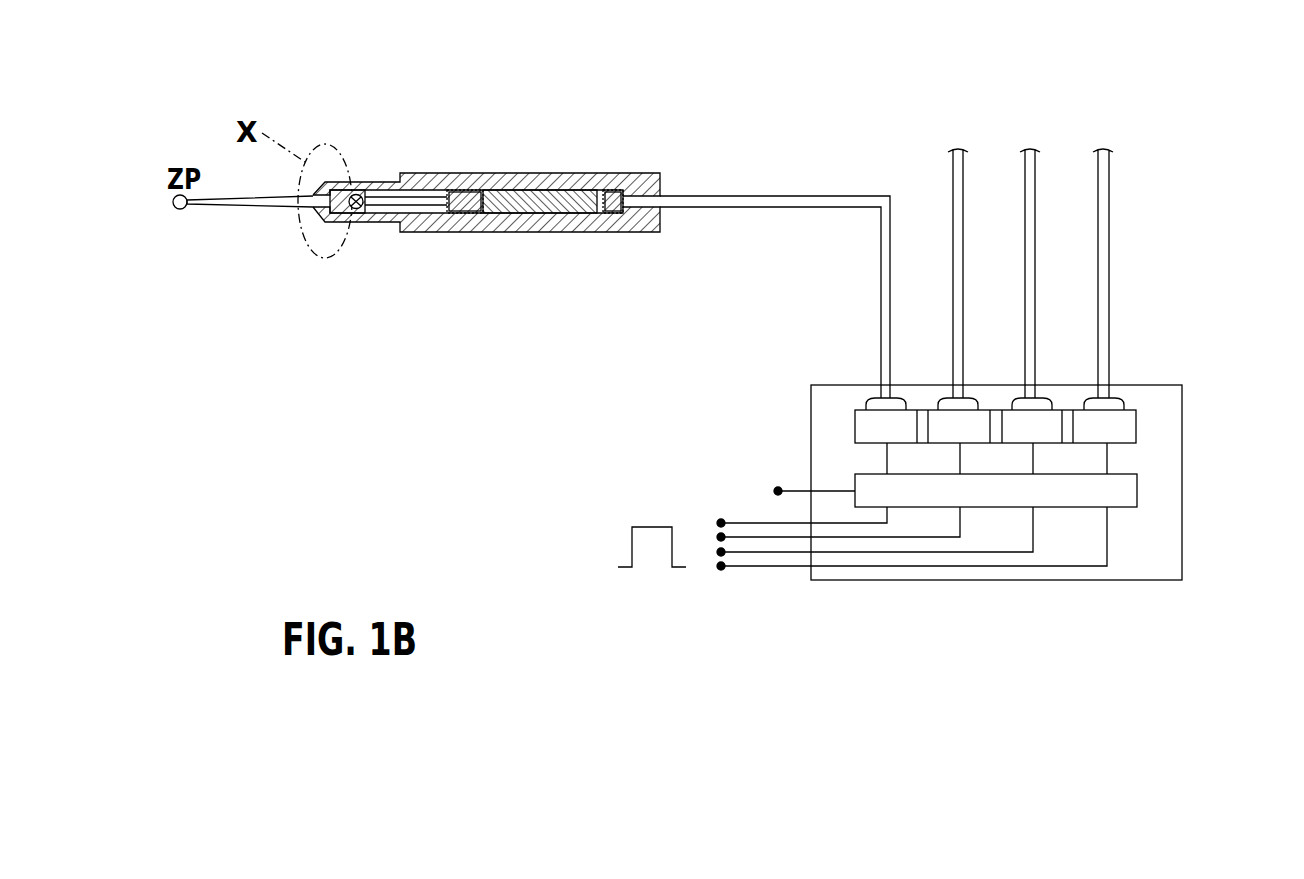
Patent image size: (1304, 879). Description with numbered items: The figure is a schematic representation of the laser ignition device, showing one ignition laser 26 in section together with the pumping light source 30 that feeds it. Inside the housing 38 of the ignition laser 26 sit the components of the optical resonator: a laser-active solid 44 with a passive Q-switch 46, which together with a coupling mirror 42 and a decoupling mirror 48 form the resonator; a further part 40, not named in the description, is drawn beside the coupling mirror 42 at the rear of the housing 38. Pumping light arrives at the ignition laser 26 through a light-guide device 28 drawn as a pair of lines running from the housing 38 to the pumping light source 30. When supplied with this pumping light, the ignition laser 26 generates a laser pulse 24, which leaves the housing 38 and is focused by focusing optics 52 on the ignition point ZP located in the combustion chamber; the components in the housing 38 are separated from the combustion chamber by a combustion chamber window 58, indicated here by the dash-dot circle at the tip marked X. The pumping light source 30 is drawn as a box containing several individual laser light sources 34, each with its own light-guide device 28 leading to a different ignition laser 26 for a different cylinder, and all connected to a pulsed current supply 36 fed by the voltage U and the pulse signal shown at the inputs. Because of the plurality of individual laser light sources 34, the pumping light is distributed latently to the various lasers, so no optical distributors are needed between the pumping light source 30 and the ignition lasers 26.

The laser pulse 24 is at (250, 210).
The ignition laser 26 is at (548, 174).
The light-guide device 28 is at (953, 227).
The pumping light source 30 is at (1147, 583).
The individual laser light source 34 is at (945, 432).
The pulsed current supply 36 is at (1117, 492).
The housing 38 is at (545, 233).
The rear ring electrode 40 is at (617, 233).
The coupling mirror 42 is at (605, 176).
The laser-active solid 44 is at (508, 175).
The passive Q-switch 46 is at (468, 233).
The decoupling mirror 48 is at (440, 176).
The focusing optics 52 is at (355, 216).
The combustion chamber window 58 is at (334, 181).